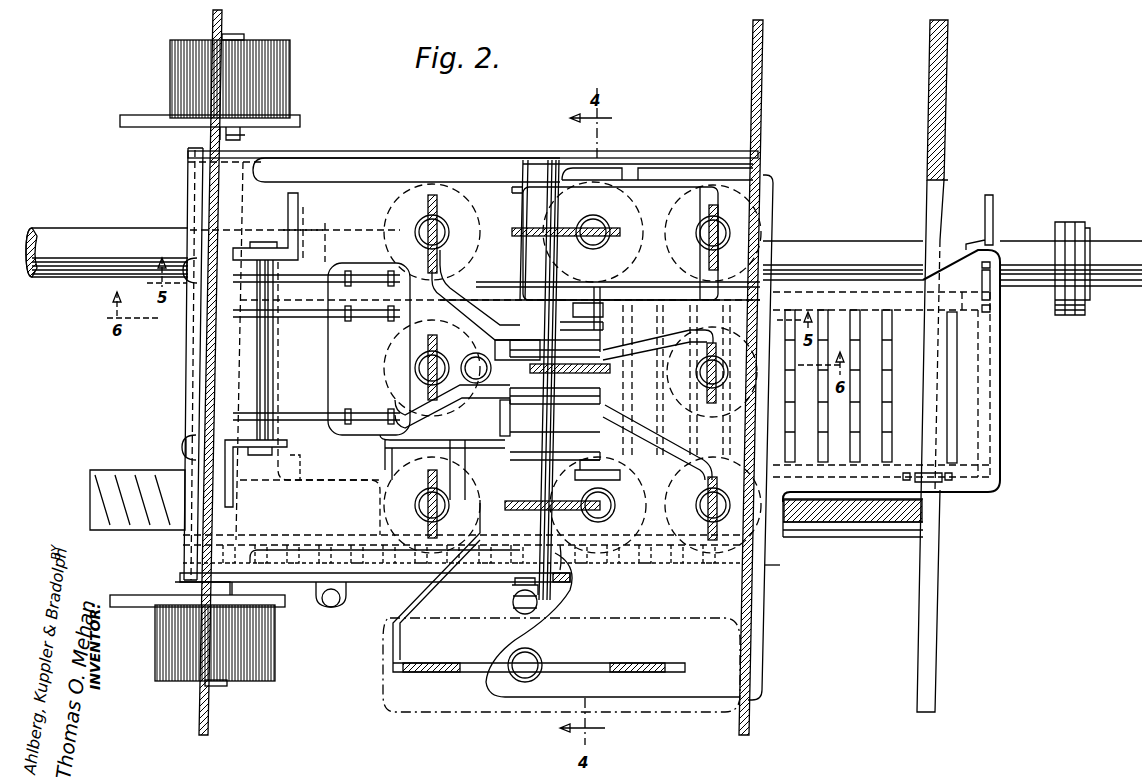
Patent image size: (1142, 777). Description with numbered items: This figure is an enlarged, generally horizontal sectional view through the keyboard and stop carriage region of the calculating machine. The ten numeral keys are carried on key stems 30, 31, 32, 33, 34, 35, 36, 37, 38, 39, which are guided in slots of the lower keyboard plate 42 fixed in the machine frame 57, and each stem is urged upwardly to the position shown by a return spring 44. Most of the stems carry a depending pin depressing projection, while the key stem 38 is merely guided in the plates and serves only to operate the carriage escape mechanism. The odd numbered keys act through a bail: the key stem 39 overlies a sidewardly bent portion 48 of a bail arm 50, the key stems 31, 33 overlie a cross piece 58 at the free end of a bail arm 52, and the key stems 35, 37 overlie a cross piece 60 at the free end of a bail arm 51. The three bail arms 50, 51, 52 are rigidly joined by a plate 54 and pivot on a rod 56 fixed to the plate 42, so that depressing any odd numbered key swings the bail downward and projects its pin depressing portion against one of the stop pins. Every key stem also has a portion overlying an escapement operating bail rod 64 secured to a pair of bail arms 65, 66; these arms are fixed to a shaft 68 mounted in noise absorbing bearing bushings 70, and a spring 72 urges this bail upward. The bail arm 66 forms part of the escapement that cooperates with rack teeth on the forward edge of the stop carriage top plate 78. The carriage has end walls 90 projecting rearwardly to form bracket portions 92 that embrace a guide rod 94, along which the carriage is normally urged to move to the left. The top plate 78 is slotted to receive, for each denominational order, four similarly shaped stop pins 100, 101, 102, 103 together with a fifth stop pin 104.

The key stem 30 is at (437, 672).
The key stem 31 is at (416, 505).
The key stem 32 is at (596, 520).
The key stem 33 is at (718, 500).
The key stem 34 is at (420, 362).
The key stem 35 is at (605, 372).
The key stem 36 is at (705, 368).
The key stem 37 is at (418, 226).
The key stem 38 is at (590, 232).
The key stem 39 is at (720, 218).
The lower keyboard plate 42 is at (763, 627).
The return spring 44 is at (596, 250).
The sidewardly bent portion 48 is at (598, 292).
The bail arm 50 is at (322, 266).
The bail arm 51 is at (292, 318).
The bail arm 52 is at (287, 418).
The plate 54 is at (350, 370).
The rod 56 is at (258, 377).
The frame 57 is at (207, 403).
The cross piece 58 is at (503, 416).
The cross piece 60 is at (515, 340).
The escapement operating bail rod 64 is at (533, 178).
The bail arm 65 is at (436, 158).
The bail arm 66 is at (396, 583).
The shaft 68 is at (234, 36).
The noise absorbing bearing bushing 70 is at (268, 87).
The spring 72 is at (512, 604).
The stop carriage top plate 78 is at (967, 461).
The end wall 90 is at (985, 438).
The bracket portion 92 is at (993, 220).
The guide rod 94 is at (825, 248).
The stop pin 100 is at (892, 444).
The stop pin 101 is at (892, 415).
The stop pin 102 is at (892, 388).
The stop pin 103 is at (892, 354).
The stop pin 104 is at (892, 329).